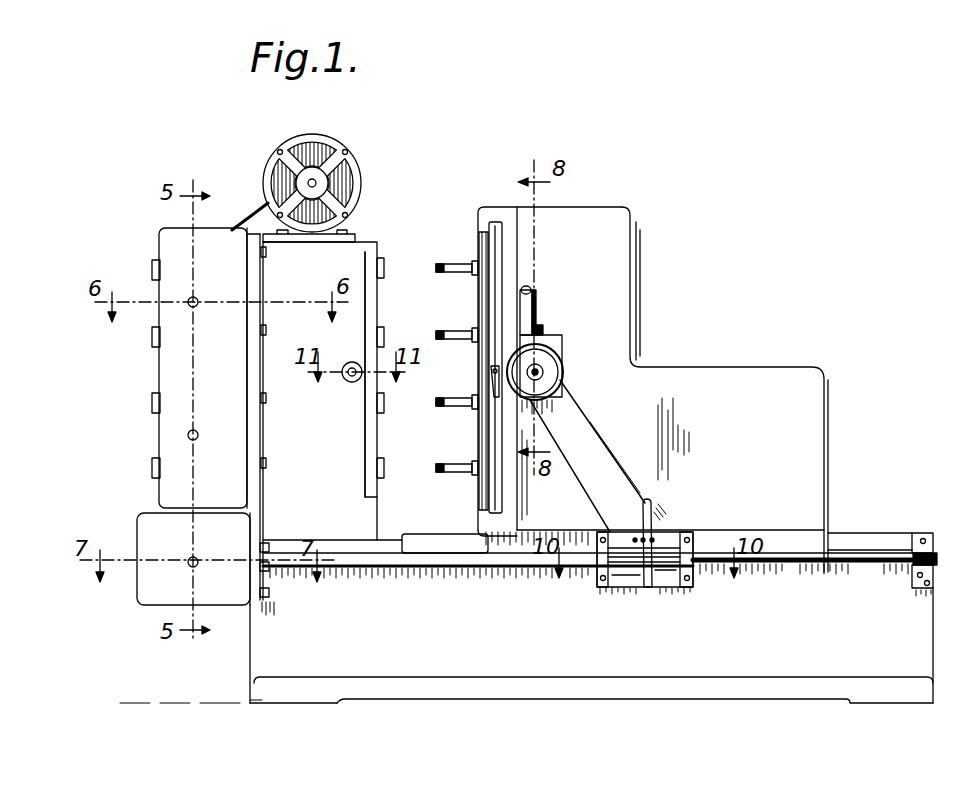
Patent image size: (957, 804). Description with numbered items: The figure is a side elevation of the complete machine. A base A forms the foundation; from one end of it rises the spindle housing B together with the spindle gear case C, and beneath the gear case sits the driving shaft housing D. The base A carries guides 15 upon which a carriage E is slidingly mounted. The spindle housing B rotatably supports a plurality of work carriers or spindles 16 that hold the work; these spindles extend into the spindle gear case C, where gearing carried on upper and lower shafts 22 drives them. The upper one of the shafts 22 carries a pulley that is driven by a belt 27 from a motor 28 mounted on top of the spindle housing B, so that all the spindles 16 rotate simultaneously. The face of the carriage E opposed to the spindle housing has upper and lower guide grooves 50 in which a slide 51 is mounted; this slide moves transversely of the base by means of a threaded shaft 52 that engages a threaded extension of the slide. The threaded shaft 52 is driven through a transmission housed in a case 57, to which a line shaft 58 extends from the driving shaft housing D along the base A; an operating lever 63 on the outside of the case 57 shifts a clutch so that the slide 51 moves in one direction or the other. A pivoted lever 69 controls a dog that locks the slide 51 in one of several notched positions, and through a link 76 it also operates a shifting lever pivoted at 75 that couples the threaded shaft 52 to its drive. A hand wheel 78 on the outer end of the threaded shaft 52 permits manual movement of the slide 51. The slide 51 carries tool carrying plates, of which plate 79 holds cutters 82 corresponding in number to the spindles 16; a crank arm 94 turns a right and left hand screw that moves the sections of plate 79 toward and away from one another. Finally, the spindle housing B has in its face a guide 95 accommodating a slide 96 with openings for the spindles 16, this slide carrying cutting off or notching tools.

The guides 15 is at (452, 538).
The work carriers or spindles 16 is at (152, 268).
The shafts 22 is at (198, 300).
The belt 27 is at (252, 212).
The motor 28 is at (350, 170).
The guide grooves 50 is at (500, 220).
The slide 51 is at (498, 265).
The threaded shaft 52 is at (543, 374).
The case 57 is at (658, 588).
The line shaft 58 is at (794, 570).
The operating lever 63 is at (652, 550).
The lever 69 is at (530, 288).
The pivot 75 is at (546, 328).
The link 76 is at (538, 306).
The hand wheel 78 is at (556, 366).
The tool carrying plate 79 is at (478, 443).
The cutters 82 is at (443, 274).
The crank arm 94 is at (490, 380).
The guide 95 is at (370, 248).
The slide 96 is at (372, 306).
The base A is at (526, 551).
The spindle housing B is at (332, 391).
The spindle gear case C is at (209, 414).
The driving shaft housing D is at (205, 564).
The carriage E is at (714, 389).